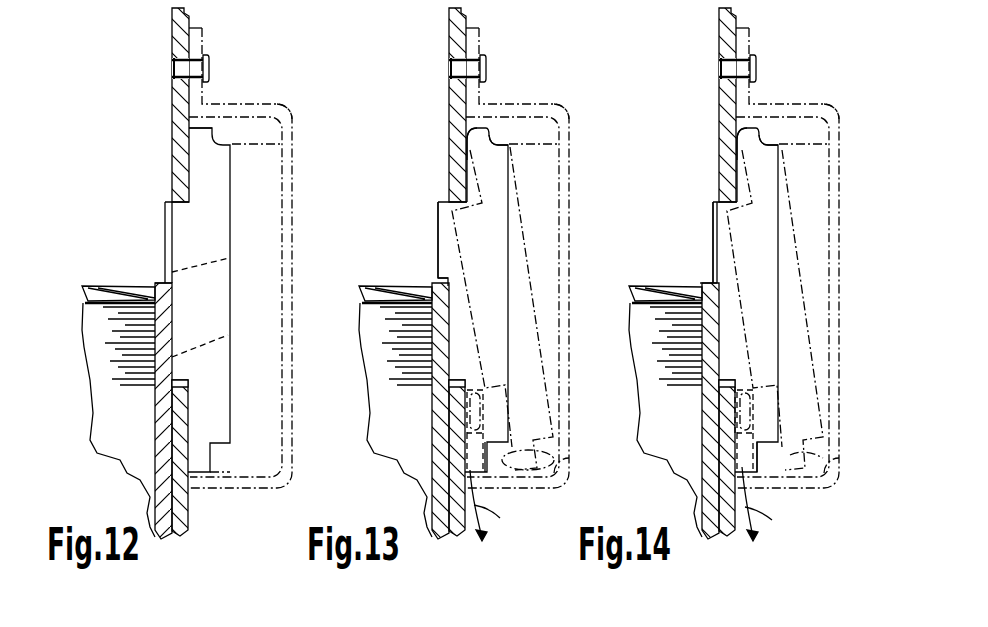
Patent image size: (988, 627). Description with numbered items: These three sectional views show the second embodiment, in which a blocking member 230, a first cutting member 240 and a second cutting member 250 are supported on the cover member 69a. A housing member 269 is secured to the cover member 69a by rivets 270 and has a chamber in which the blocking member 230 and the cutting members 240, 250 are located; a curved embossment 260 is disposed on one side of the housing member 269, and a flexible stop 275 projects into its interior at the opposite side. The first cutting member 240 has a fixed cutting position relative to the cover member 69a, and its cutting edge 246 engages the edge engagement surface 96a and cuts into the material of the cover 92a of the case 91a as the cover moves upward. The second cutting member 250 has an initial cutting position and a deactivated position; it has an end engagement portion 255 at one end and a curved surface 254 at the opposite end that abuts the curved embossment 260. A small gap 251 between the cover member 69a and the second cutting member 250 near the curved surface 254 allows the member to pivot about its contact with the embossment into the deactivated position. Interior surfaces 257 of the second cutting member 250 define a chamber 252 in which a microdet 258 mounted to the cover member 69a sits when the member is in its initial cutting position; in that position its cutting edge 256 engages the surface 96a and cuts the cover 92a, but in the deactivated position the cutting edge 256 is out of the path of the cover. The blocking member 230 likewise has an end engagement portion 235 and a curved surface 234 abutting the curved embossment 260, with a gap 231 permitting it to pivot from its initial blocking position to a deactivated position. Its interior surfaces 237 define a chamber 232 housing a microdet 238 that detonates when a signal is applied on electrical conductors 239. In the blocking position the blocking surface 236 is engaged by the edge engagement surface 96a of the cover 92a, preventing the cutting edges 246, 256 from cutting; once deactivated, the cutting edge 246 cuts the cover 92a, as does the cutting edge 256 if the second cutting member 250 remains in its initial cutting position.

In FIG. 12, the cover member 69a is at (178, 129).
In FIG. 13, the cover member 69a is at (452, 42).
In FIG. 14, the cover member 69a is at (723, 45).
In FIG. 12, the rivets 270 is at (190, 68).
In FIG. 13, the rivets 270 is at (467, 70).
In FIG. 14, the rivets 270 is at (737, 70).
In FIG. 12, the curved embossment 260 is at (248, 130).
In FIG. 13, the curved embossment 260 is at (518, 133).
In FIG. 14, the curved embossment 260 is at (782, 130).
In FIG. 12, the housing member 269 is at (287, 107).
In FIG. 13, the housing member 269 is at (550, 98).
In FIG. 14, the housing member 269 is at (803, 103).
In FIG. 12, the first cutting member 240 is at (230, 242).
In FIG. 12, the cutting edge 246 is at (152, 287).
In FIG. 12, the case 91a is at (125, 288).
In FIG. 13, the case 91a is at (368, 295).
In FIG. 14, the case 91a is at (640, 295).
In FIG. 12, the edge engagement surface 96a is at (158, 285).
In FIG. 13, the edge engagement surface 96a is at (437, 283).
In FIG. 14, the edge engagement surface 96a is at (708, 287).
In FIG. 12, the cover 92a is at (163, 377).
In FIG. 13, the cover 92a is at (437, 465).
In FIG. 14, the cover 92a is at (712, 465).
In FIG. 12, the flexible stop 275 is at (228, 470).
In FIG. 13, the flexible stop 275 is at (567, 455).
In FIG. 14, the flexible stop 275 is at (827, 468).
In FIG. 13, the blocking member 230 is at (508, 260).
In FIG. 13, the gap 231 is at (468, 160).
In FIG. 13, the curved surface 234 is at (508, 143).
In FIG. 13, the blocking surface 236 is at (415, 290).
In FIG. 13, the interior surfaces 237 is at (507, 388).
In FIG. 13, the chamber 232 is at (480, 398).
In FIG. 13, the microdet 238 is at (473, 417).
In FIG. 13, the end engagement portion 235 is at (487, 472).
In FIG. 13, the electrical conductors 239 is at (503, 511).
In FIG. 14, the electrical conductors 239 is at (774, 508).
In FIG. 14, the second cutting member 250 is at (777, 300).
In FIG. 14, the gap 251 is at (738, 163).
In FIG. 14, the curved surface 254 is at (767, 138).
In FIG. 14, the cutting edge 256 is at (700, 285).
In FIG. 14, the microdet 258 is at (753, 388).
In FIG. 14, the chamber 252 is at (750, 418).
In FIG. 14, the interior surfaces 257 is at (743, 410).
In FIG. 14, the end engagement portion 255 is at (758, 477).